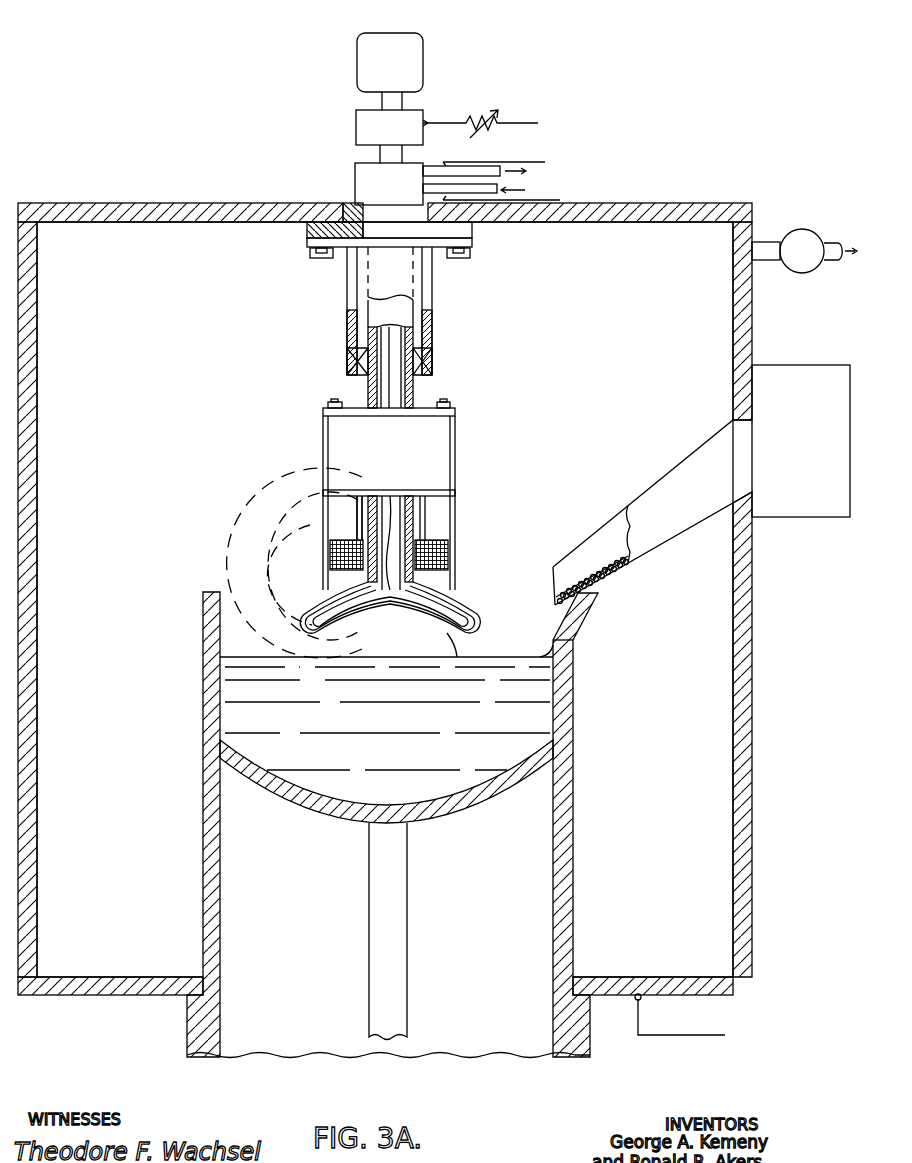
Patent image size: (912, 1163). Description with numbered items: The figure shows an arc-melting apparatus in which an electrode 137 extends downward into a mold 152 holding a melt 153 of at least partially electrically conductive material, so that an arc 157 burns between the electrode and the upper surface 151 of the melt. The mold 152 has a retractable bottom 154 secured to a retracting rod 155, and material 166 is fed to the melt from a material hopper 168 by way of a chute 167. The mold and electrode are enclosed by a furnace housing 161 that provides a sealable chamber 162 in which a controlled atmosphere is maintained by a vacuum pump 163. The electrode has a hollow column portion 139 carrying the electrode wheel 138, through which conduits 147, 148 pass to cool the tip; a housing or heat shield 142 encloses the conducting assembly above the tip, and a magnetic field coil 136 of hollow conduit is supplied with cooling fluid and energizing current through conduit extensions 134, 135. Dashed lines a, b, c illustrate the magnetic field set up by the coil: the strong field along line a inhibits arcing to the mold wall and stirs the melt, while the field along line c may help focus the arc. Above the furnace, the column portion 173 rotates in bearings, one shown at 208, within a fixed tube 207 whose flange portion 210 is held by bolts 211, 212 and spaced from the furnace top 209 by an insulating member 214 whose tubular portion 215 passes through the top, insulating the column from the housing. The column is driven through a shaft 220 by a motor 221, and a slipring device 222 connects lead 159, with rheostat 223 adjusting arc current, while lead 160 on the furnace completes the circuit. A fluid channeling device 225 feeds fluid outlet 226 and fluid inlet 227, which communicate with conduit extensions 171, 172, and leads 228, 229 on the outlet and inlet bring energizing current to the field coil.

The conduit extension 134 is at (353, 527).
The conduit extension 135 is at (423, 510).
The magnetic field coil 136 is at (440, 547).
The electrode 137 is at (453, 587).
The electrode wheel 138 is at (463, 604).
The hollow shaft or column portion 139 is at (357, 515).
The housing or heat shield 142 is at (457, 438).
The conduit 147 is at (387, 496).
The conduit 148 is at (397, 528).
The upper surface of the melt 151 is at (553, 648).
The mold 152 is at (570, 757).
The melt 153 is at (540, 689).
The retractable bottom 154 is at (458, 808).
The retracting rod 155 is at (400, 968).
The arc 157 is at (458, 639).
The lead 159 is at (452, 123).
The lead 160 is at (692, 1035).
The furnace housing 161 is at (752, 835).
The sealable chamber 162 is at (218, 391).
The vacuum pump 163 is at (810, 229).
The material 166 is at (598, 553).
The chute 167 is at (675, 480).
The material hopper 168 is at (808, 366).
The conduit extension 171 is at (378, 393).
The conduit extension 172 is at (403, 395).
The tube portion or column portion 173 is at (405, 312).
The fixed tube 207 is at (347, 325).
The bearing 208 is at (350, 358).
The top of the furnace enclosure 209 is at (236, 203).
The flange portion 210 is at (305, 242).
The bolt 211 is at (320, 258).
The bolt 212 is at (460, 258).
The insulating member 214 is at (307, 232).
The extended tubular portion 215 is at (346, 205).
The shaft 220 is at (382, 100).
The motor 221 is at (357, 50).
The slipring or commutator device 222 is at (356, 128).
The rheostat 223 is at (490, 110).
The fluid channeling device 225 is at (415, 170).
The fluid outlet 226 is at (445, 165).
The fluid inlet 227 is at (497, 188).
The lead 228 is at (545, 162).
The lead 229 is at (560, 200).
The dashed line a is at (240, 537).
The dashed line b is at (280, 537).
The dashed line c is at (278, 573).